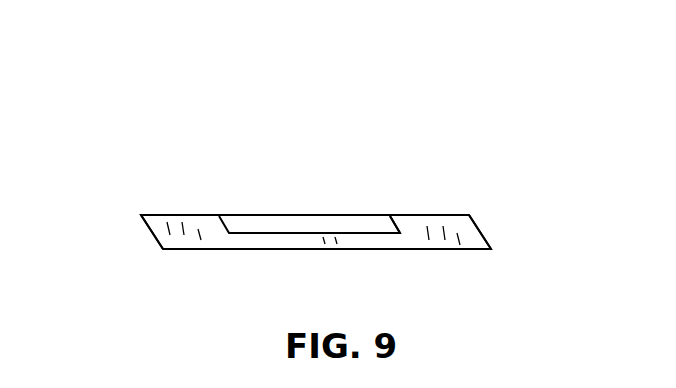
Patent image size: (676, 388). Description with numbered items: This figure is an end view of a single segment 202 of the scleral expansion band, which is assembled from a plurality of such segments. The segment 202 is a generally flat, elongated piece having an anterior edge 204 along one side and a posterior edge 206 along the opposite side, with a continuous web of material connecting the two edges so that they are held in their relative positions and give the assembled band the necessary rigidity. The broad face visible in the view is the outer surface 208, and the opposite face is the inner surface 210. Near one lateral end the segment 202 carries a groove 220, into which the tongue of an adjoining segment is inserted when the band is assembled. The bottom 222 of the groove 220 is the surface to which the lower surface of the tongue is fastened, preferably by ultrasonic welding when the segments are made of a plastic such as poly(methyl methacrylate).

The segment 202 is at (487, 175).
The anterior edge 204 is at (152, 233).
The posterior edge 206 is at (476, 226).
The outer surface 208 is at (190, 215).
The inner surface 210 is at (315, 249).
The groove 220 is at (398, 226).
The bottom of the groove 222 is at (305, 232).